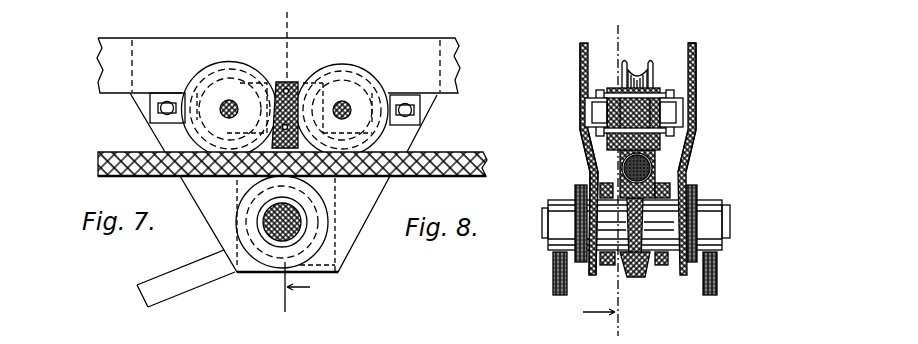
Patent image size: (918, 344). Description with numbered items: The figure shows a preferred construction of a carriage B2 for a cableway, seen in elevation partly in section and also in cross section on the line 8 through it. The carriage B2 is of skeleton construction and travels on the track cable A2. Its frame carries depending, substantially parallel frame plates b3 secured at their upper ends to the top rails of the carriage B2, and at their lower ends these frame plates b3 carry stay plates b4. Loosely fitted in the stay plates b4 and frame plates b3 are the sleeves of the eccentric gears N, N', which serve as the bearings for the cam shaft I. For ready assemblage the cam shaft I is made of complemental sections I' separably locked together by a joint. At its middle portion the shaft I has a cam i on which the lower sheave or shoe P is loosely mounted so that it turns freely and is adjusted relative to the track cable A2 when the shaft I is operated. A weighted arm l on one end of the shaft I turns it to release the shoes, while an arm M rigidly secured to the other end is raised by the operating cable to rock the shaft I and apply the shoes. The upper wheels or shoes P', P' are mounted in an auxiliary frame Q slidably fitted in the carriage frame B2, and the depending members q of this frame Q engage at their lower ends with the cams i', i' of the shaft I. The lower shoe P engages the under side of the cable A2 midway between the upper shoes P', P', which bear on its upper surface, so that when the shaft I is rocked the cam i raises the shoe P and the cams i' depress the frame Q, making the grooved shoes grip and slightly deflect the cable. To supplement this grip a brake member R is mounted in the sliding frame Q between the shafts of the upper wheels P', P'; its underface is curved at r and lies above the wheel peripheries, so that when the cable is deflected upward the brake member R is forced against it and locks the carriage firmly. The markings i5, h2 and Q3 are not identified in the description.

In FIG. 7, the carriage B2 is at (452, 62).
In FIG. 8, the carriage B2 is at (585, 43).
In FIG. 7, the frame plates b3 is at (416, 140).
In FIG. 8, the frame plates b3 is at (582, 103).
In FIG. 7, the upper wheels P' is at (278, 101).
In FIG. 7, the brake member R is at (291, 81).
In FIG. 8, the brake member R is at (630, 128).
In FIG. 7, the track cable A2 is at (460, 153).
In FIG. 8, the track cable A2 is at (578, 148).
In FIG. 7, the section line 8— 8 is at (284, 160).
In FIG. 7, the lower wheel P is at (306, 222).
In FIG. 8, the lower wheel P is at (621, 230).
In FIG. 7, the cam i is at (265, 251).
In FIG. 8, the cam i is at (635, 245).
In FIG. 7, the cam shaft I is at (229, 225).
In FIG. 8, the cam shaft I is at (650, 225).
In FIG. 7, the curved underface r is at (237, 182).
In FIG. 8, the curved underface r is at (643, 118).
In FIG. 7, the cams i' is at (326, 241).
In FIG. 8, the cams i' is at (637, 201).
In FIG. 8, the sleeve i5 is at (665, 222).
In FIG. 8, the eccentric gear N is at (563, 214).
In FIG. 8, the eccentric gear N' is at (714, 206).
In FIG. 8, the arm M is at (553, 282).
In FIG. 8, the weighted arm l is at (713, 273).
In FIG. 8, the complemental sections I' is at (613, 289).
In FIG. 8, the depending members q is at (581, 142).
In FIG. 8, the stay plates b4 is at (590, 170).
In FIG. 8, the auxiliary frame Q is at (692, 43).
In FIG. 8, the arm h2 is at (507, 8).
In FIG. 8, the plate Q3 is at (690, 331).